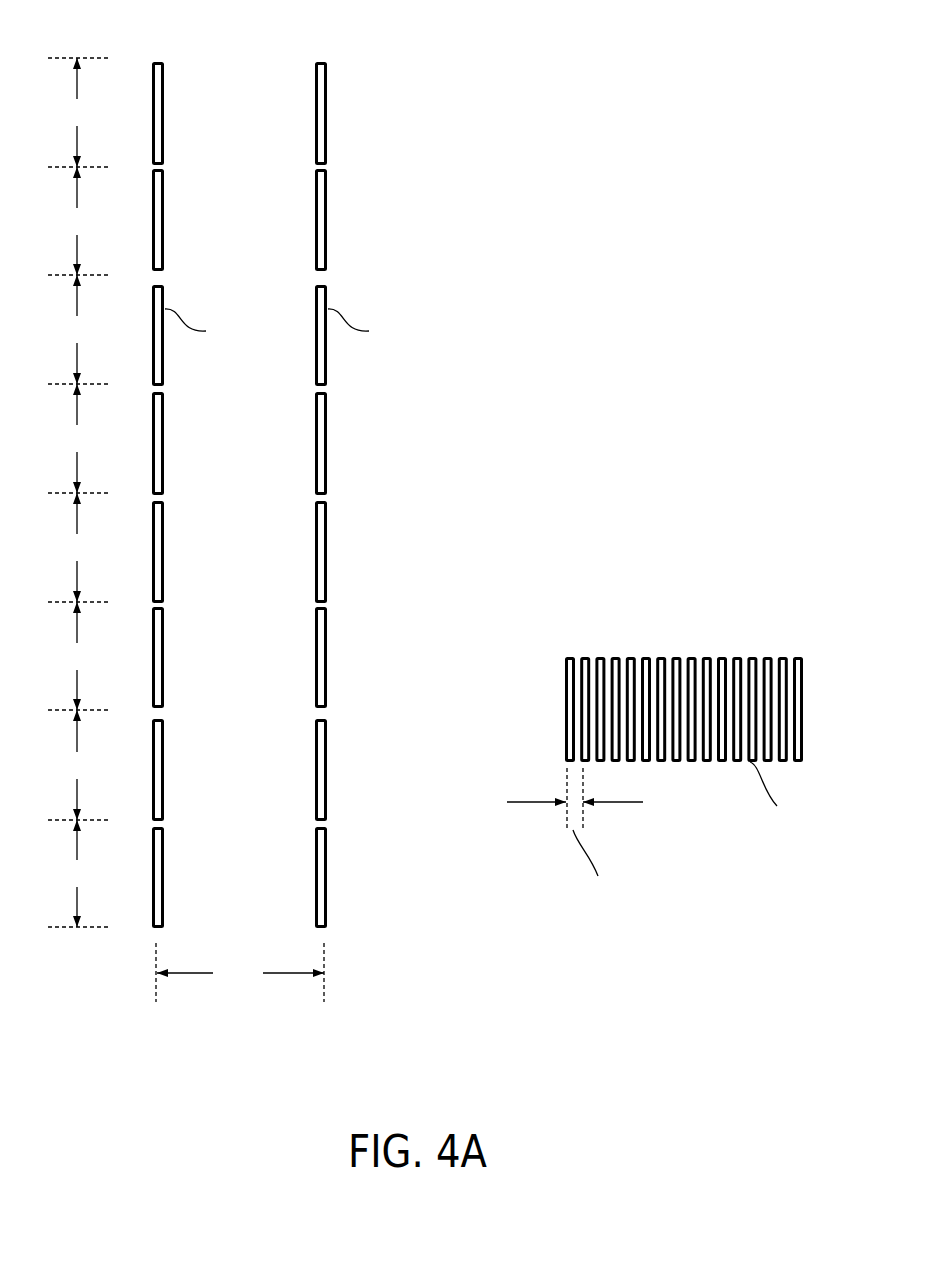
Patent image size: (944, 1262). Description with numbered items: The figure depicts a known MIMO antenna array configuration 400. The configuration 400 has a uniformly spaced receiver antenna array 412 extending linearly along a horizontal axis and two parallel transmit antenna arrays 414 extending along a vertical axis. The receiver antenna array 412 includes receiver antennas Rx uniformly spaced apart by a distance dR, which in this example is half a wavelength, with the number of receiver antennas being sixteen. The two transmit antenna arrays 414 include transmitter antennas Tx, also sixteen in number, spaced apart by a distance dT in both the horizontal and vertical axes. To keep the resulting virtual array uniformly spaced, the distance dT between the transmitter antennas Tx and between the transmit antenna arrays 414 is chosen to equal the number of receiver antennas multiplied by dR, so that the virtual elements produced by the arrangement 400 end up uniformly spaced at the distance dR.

The MIMO antenna array configuration 400 is at (759, 162).
The receive antenna array 412 is at (806, 650).
The transmit antenna arrays 414 is at (183, 66).